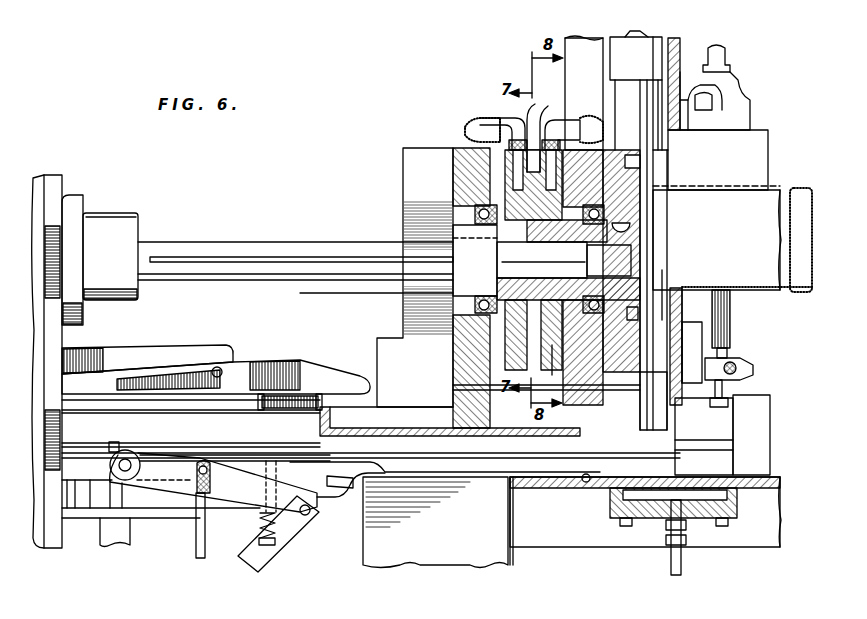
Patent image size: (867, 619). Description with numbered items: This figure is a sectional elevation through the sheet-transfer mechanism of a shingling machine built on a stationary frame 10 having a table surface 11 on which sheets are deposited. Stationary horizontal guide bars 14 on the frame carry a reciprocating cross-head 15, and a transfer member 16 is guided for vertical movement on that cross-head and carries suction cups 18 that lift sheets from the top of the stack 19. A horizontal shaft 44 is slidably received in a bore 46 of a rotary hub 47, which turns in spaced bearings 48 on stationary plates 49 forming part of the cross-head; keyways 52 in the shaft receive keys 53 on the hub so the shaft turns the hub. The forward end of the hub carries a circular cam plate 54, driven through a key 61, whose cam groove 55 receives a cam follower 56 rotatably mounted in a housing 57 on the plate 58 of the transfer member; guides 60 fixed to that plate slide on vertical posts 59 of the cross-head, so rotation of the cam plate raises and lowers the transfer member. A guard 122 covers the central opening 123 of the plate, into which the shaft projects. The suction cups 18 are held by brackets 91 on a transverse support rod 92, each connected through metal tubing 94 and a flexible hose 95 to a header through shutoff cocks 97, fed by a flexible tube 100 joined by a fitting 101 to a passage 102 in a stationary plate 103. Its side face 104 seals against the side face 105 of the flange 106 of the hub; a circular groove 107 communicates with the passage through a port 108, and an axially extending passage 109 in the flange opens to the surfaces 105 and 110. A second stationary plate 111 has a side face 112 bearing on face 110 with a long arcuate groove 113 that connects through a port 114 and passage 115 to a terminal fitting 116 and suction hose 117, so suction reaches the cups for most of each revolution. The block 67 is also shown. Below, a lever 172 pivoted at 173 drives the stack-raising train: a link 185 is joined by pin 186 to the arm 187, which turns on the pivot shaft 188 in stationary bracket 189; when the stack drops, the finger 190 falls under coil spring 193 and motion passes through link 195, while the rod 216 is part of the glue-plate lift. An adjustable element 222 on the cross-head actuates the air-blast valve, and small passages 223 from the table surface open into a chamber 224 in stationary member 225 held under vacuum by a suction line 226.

The stationary frame 10 is at (545, 568).
The table surface 11 is at (585, 482).
The horizontal guide bars 14 is at (248, 412).
The cross-head 15 is at (414, 145).
The transfer member 16 is at (700, 335).
The suction cups 18 is at (715, 405).
The stack 19 is at (432, 553).
The horizontal shaft 44 is at (176, 243).
The bore 46 is at (628, 278).
The rotary hub 47 is at (640, 236).
The bearings 48 is at (480, 214).
The stationary plates 49 is at (451, 393).
The longitudinal keyways 52 is at (253, 258).
The keys 53 is at (452, 257).
The circular cam plate 54 is at (633, 387).
The cam groove 55 is at (634, 318).
The cam follower 56 is at (634, 152).
The housing 57 is at (752, 136).
The plate 58 is at (683, 45).
The vertical posts 59 is at (646, 33).
The guides 60 is at (636, 58).
The key 61 is at (630, 225).
The housing block 67 is at (403, 166).
The brackets 91 is at (746, 359).
The transverse support rod 92 is at (740, 368).
The metal tubing 94 is at (730, 400).
The flexible hose 95 is at (732, 310).
The shutoff cocks 97 is at (720, 116).
The flexible tube 100 is at (586, 125).
The fitting 101 is at (553, 134).
The passage 102 is at (556, 170).
The stationary plate 103 is at (551, 369).
The side face 104 is at (535, 160).
The side face 105 is at (543, 252).
The flange 106 is at (570, 296).
The circular groove 107 is at (548, 345).
The port 108 is at (556, 190).
The axially extending passage 109 is at (475, 260).
The side surface 110 is at (542, 260).
The stationary plate 111 is at (528, 330).
The side face 112 is at (518, 318).
The arcuate groove 113 is at (530, 338).
The port 114 is at (510, 192).
The passage 115 is at (505, 170).
The terminal fitting 116 is at (512, 130).
The suction hose 117 is at (480, 122).
The guard 122 is at (768, 190).
The central opening 123 is at (676, 293).
The lever 172 is at (175, 362).
The pivot 173 is at (220, 368).
The link 185 is at (265, 548).
The pin 186 is at (308, 514).
The arm 187 is at (230, 493).
The pivot shaft 188 is at (128, 462).
The stationary bracket 189 is at (89, 458).
The finger 190 is at (276, 458).
The coil spring 193 is at (270, 535).
The link 195 is at (198, 540).
The vertically slidable rod 216 is at (116, 443).
The adjustable element 222 is at (304, 396).
The passages 223 is at (700, 482).
The chamber 224 is at (702, 495).
The stationary member 225 is at (647, 512).
The suction line 226 is at (676, 565).